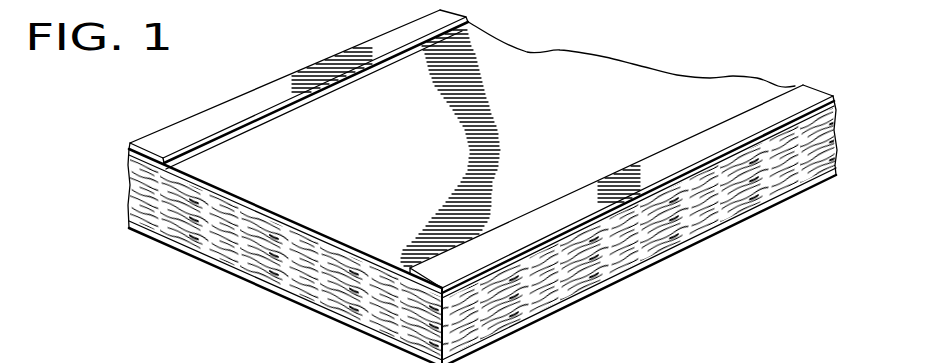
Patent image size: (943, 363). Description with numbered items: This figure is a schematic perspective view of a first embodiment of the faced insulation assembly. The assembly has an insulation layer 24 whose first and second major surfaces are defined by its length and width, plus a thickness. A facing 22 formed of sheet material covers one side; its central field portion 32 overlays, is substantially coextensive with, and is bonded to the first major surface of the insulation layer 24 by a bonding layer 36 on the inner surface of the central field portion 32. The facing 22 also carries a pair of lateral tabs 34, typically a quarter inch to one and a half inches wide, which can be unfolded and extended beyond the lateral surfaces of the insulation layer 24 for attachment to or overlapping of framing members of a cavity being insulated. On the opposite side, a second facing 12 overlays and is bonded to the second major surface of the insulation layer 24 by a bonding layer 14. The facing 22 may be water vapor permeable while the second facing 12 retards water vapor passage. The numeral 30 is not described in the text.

The second facing 12 is at (728, 232).
The bonding layer 14 is at (748, 208).
The facing 22 is at (552, 93).
The insulation layer 24 is at (311, 272).
The panel assembly 30 is at (682, 292).
The central field portion 32 is at (421, 192).
The lateral tabs 34 is at (218, 113).
The bonding layer 36 is at (212, 200).